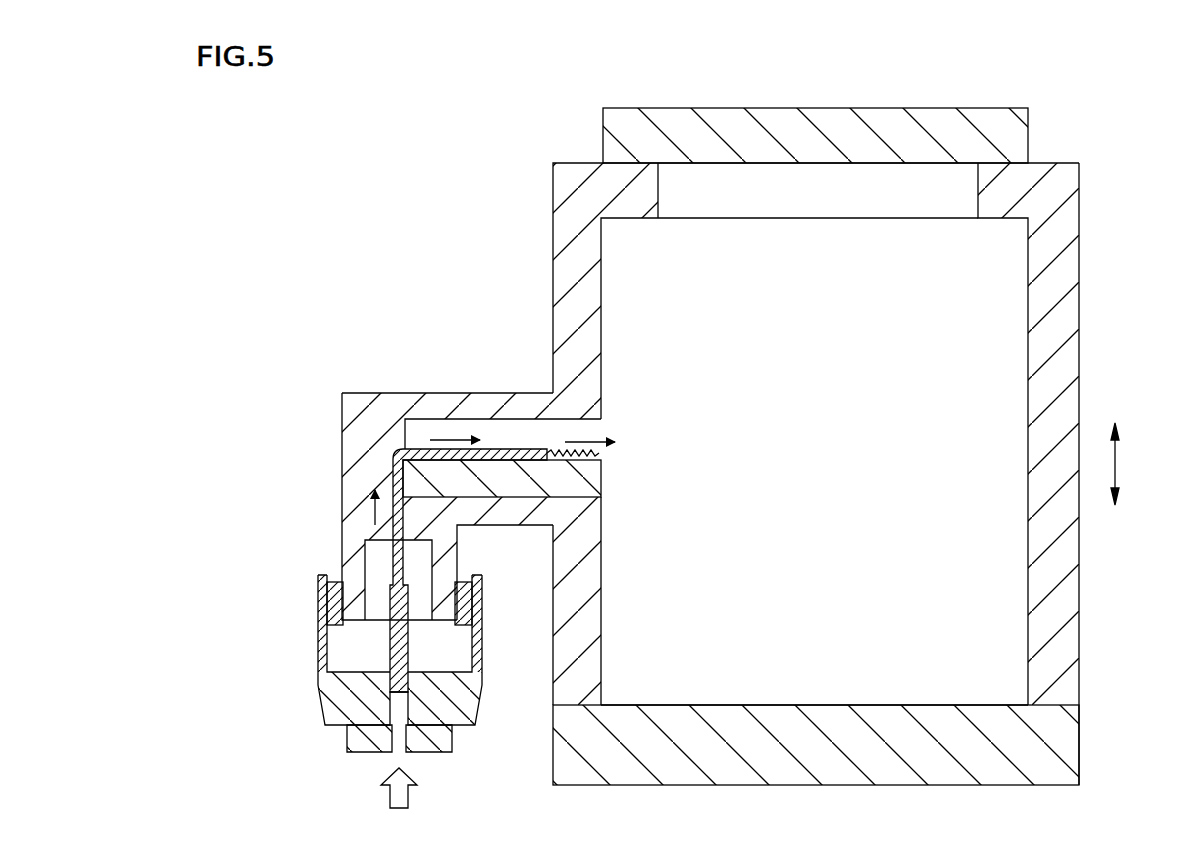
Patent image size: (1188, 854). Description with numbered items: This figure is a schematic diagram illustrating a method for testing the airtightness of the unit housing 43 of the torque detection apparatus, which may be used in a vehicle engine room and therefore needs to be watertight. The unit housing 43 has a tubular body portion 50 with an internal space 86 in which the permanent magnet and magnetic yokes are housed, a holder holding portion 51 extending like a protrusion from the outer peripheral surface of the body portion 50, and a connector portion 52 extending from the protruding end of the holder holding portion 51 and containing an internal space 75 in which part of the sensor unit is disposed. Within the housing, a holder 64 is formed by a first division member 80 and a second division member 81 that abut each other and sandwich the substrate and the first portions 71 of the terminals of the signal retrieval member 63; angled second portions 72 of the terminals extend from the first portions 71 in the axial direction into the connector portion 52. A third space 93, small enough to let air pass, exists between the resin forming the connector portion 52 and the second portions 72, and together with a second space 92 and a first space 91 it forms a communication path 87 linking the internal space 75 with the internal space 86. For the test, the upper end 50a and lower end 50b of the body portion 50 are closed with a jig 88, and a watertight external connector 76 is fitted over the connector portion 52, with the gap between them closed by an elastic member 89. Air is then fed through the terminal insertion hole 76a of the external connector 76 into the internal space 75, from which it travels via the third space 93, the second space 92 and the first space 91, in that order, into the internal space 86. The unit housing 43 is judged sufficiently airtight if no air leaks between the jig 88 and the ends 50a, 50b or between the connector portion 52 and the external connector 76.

The unit housing 43 is at (858, 446).
The body portion 50 is at (572, 172).
The upper end 50a is at (1018, 182).
The lower end 50b is at (1072, 690).
The holder holding portion 51 is at (483, 400).
The connector portion 52 is at (355, 495).
The signal retrieval member 63 is at (391, 499).
The holder 64 is at (562, 449).
The first portion 71 is at (427, 448).
The second portion 72 is at (397, 472).
The internal space 75 is at (378, 557).
The external connector 76 is at (333, 694).
The terminal insertion hole 76a is at (395, 703).
The first division member 80 is at (585, 486).
The second division member 81 is at (552, 425).
The internal space 86 is at (802, 338).
The communication path 87 is at (528, 432).
The jig 88 is at (1018, 136).
The elastic member 89 is at (335, 605).
The first space 91 is at (600, 452).
The second space 92 is at (512, 462).
The third space 93 is at (347, 528).